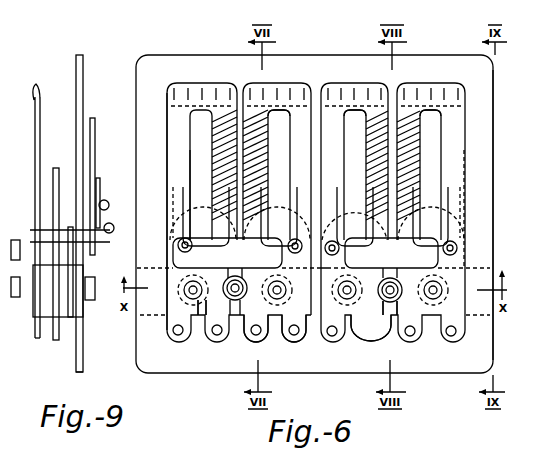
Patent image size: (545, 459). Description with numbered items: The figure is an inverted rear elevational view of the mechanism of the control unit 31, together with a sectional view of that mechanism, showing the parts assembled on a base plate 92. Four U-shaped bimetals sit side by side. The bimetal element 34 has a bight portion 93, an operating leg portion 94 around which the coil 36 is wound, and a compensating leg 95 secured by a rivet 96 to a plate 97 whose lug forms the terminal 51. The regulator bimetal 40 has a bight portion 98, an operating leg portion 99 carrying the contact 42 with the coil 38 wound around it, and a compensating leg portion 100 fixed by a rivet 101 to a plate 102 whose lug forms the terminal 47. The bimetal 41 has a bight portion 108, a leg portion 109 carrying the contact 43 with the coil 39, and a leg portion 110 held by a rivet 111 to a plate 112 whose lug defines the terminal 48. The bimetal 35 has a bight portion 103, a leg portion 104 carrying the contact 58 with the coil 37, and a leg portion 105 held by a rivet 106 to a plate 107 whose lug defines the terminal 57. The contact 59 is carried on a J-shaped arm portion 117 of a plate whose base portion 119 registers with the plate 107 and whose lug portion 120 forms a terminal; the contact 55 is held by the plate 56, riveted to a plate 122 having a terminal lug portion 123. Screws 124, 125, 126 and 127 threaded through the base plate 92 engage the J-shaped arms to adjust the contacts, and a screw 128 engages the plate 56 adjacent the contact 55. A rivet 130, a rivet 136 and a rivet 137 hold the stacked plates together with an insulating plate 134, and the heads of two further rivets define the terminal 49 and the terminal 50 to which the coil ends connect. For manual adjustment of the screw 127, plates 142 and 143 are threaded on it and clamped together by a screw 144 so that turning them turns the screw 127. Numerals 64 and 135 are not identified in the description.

In FIG. 6, the control unit 31 is at (136, 56).
In FIG. 6, the bimetal element 34 is at (273, 83).
In FIG. 6, the bimetal 35 is at (433, 84).
In FIG. 9, the bimetal 35 is at (35, 88).
In FIG. 6, the coil 36 is at (262, 144).
In FIG. 6, the coil 37 is at (422, 135).
In FIG. 6, the coil 38 is at (215, 139).
In FIG. 6, the coil 39 is at (376, 145).
In FIG. 6, the regulator bimetal 40 is at (197, 79).
In FIG. 6, the bimetal 41 is at (343, 85).
In FIG. 6, the contact 42 is at (162, 209).
In FIG. 6, the contact 43 is at (384, 250).
In FIG. 6, the terminal 47 is at (170, 345).
In FIG. 6, the terminal 48 is at (332, 343).
In FIG. 6, the terminal 49 is at (230, 283).
In FIG. 6, the terminal 50 is at (398, 285).
In FIG. 6, the terminal 51 is at (296, 343).
In FIG. 6, the contact 55 is at (274, 285).
In FIG. 6, the plate 56 is at (177, 247).
In FIG. 6, the terminal 57 is at (451, 343).
In FIG. 6, the contact 58 is at (420, 248).
In FIG. 9, the contact 58 is at (40, 230).
In FIG. 9, the contact 59 is at (40, 225).
In FIG. 6, the lobe 64 is at (256, 345).
In FIG. 6, the base plate 92 is at (466, 58).
In FIG. 9, the base plate 92 is at (84, 78).
In FIG. 6, the bight portion 93 is at (280, 96).
In FIG. 6, the operating leg portion 94 is at (258, 161).
In FIG. 6, the compensating leg 95 is at (287, 137).
In FIG. 6, the rivet 96 is at (297, 238).
In FIG. 6, the plate 97 is at (258, 340).
In FIG. 6, the bight portion 98 is at (203, 95).
In FIG. 6, the operating leg portion 99 is at (214, 153).
In FIG. 6, the compensating leg portion 100 is at (167, 140).
In FIG. 6, the rivet 101 is at (182, 241).
In FIG. 6, the plate 102 is at (166, 310).
In FIG. 6, the bight portion 103 is at (440, 96).
In FIG. 6, the leg portion 104 is at (408, 157).
In FIG. 6, the leg portion 105 is at (458, 167).
In FIG. 6, the rivet 106 is at (458, 248).
In FIG. 6, the plate 107 is at (401, 308).
In FIG. 9, the plate 107 is at (36, 339).
In FIG. 6, the bight portion 108 is at (354, 96).
In FIG. 6, the leg portion 109 is at (372, 162).
In FIG. 6, the leg portion 110 is at (348, 128).
In FIG. 6, the rivet 111 is at (331, 240).
In FIG. 6, the plate 112 is at (385, 322).
In FIG. 9, the J-shaped arm portion 117 is at (68, 164).
In FIG. 9, the base portion 119 is at (50, 298).
In FIG. 6, the lug portion 120 is at (410, 343).
In FIG. 9, the lug portion 120 is at (54, 340).
In FIG. 6, the plate 122 is at (203, 322).
In FIG. 6, the lug portion 123 is at (222, 320).
In FIG. 6, the screw 124 is at (171, 222).
In FIG. 6, the screw 125 is at (266, 247).
In FIG. 6, the screw 126 is at (364, 248).
In FIG. 6, the screw 127 is at (464, 213).
In FIG. 9, the screw 127 is at (112, 234).
In FIG. 6, the screw 128 is at (172, 266).
In FIG. 6, the rivet 130 is at (184, 287).
In FIG. 9, the insulating plate 134 is at (84, 350).
In FIG. 6, the mounting hole 135 is at (277, 300).
In FIG. 6, the rivet 136 is at (348, 300).
In FIG. 6, the rivet 137 is at (440, 307).
In FIG. 9, the rivet 137 is at (95, 300).
In FIG. 9, the plate 142 is at (96, 126).
In FIG. 9, the plate 143 is at (101, 180).
In FIG. 9, the screw 144 is at (107, 202).